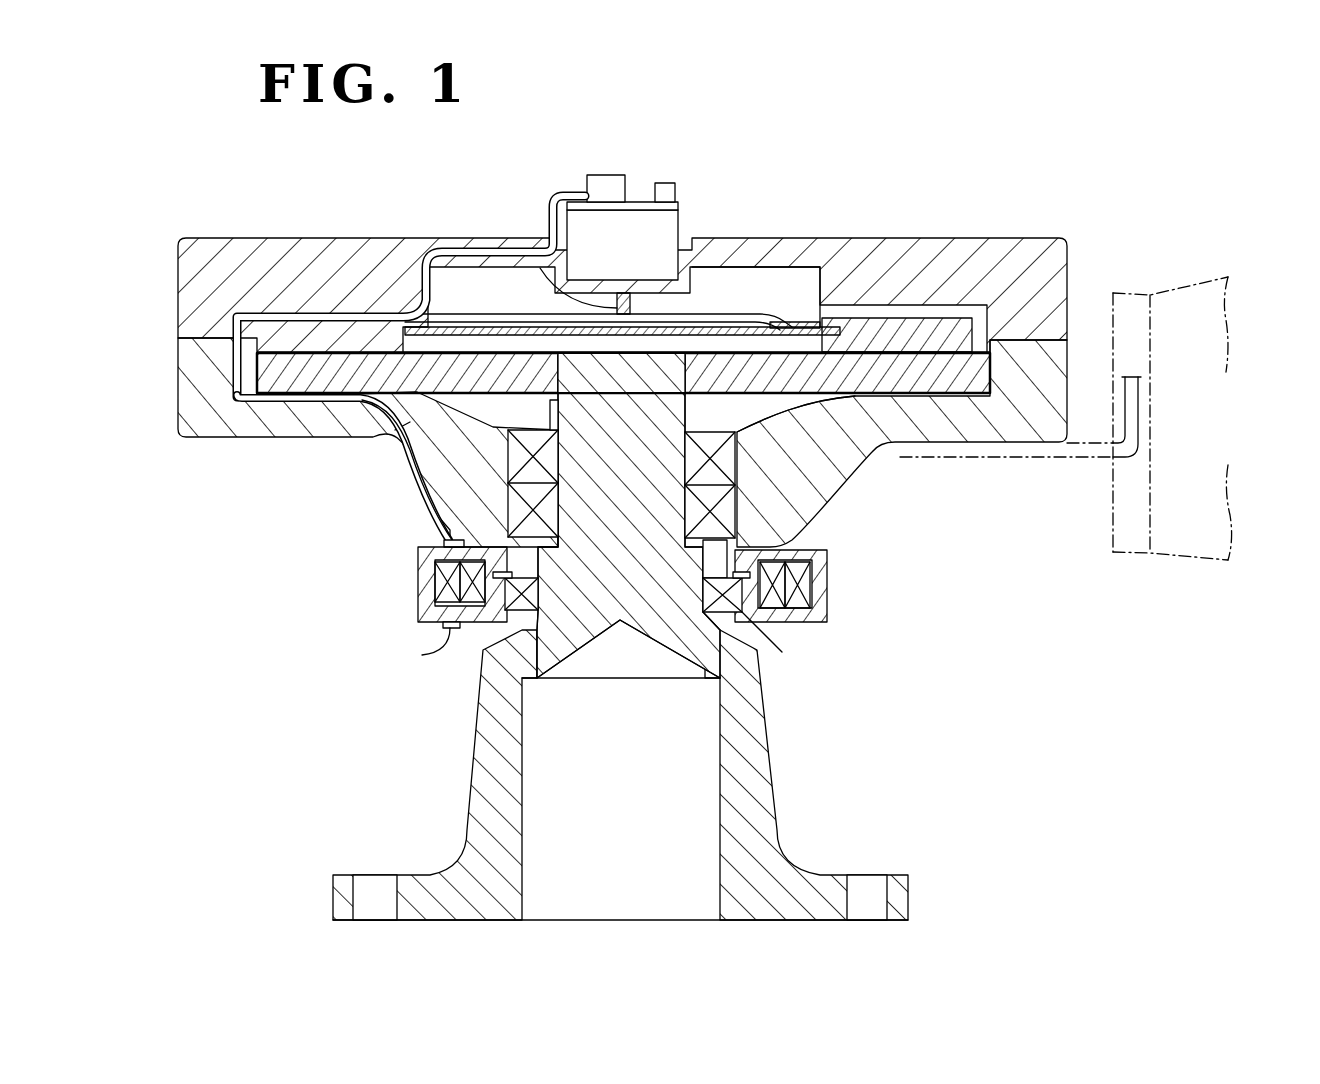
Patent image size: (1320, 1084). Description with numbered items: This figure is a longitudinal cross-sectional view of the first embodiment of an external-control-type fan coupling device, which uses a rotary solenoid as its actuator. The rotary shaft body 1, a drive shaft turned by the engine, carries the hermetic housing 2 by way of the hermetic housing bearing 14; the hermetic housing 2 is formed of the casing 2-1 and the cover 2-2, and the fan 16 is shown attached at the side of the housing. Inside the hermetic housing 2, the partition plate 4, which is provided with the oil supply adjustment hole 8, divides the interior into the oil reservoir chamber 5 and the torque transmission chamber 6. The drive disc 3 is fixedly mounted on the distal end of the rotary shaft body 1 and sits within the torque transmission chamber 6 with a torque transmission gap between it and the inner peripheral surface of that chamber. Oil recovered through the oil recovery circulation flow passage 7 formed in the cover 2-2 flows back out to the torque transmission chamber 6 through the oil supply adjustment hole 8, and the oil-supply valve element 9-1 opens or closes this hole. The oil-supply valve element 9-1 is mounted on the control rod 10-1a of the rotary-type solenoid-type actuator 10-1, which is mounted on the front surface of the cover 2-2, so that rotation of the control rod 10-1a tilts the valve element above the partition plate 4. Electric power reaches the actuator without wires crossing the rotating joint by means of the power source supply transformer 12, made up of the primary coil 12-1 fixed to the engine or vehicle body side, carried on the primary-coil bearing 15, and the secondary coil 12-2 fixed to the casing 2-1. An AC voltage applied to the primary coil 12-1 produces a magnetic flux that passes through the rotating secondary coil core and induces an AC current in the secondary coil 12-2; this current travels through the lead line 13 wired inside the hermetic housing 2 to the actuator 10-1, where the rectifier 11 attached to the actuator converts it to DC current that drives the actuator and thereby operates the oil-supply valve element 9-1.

The rotary shaft body 1 is at (765, 778).
The hermetic housing 2 is at (623, 333).
The casing 2-1 is at (251, 440).
The cover 2-2 is at (320, 237).
The drive disc 3 is at (916, 365).
The partition plate 4 is at (433, 327).
The oil reservoir chamber 5 is at (762, 285).
The torque transmission chamber 6 is at (815, 398).
The oil recovery circulation flow passage 7 is at (952, 316).
The oil supply adjustment hole 8 is at (800, 323).
The oil-supply valve element 9-1 is at (718, 320).
The rotary-type solenoid-type actuator 10-1 is at (637, 215).
The control rod 10-1a is at (575, 330).
The rectifier 11 is at (604, 175).
The power source supply transformer 12 is at (615, 616).
The primary coil 12-1 is at (722, 612).
The secondary coil 12-2 is at (812, 583).
The lead line 13 is at (275, 312).
The hermetic housing bearing 14 is at (452, 538).
The primary-coil bearing 15 is at (495, 648).
The fan 16 is at (1180, 585).